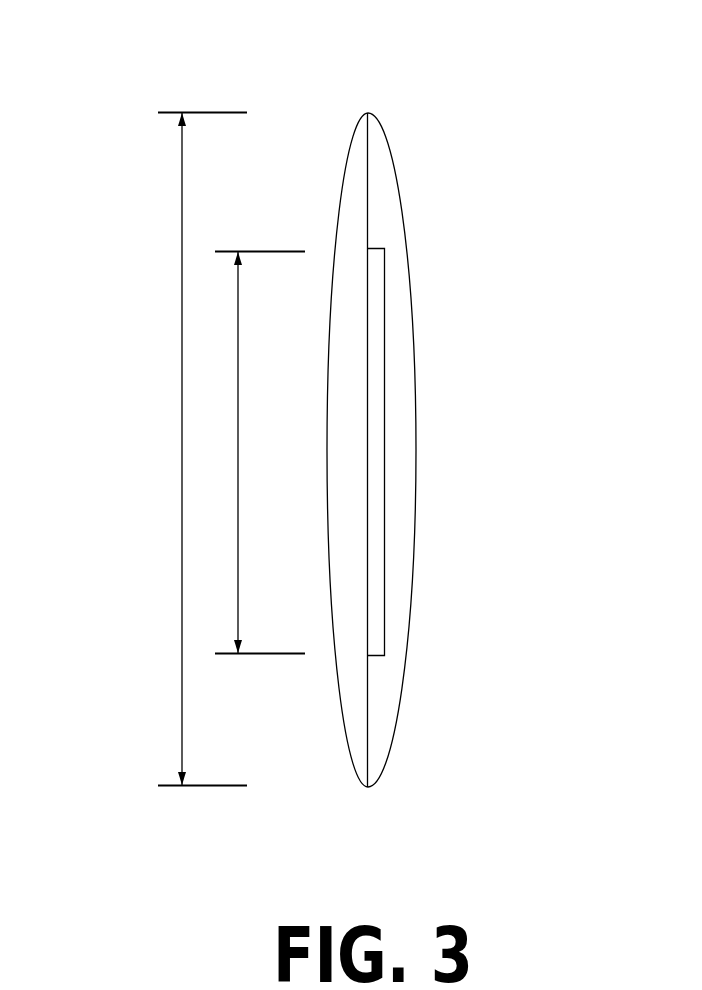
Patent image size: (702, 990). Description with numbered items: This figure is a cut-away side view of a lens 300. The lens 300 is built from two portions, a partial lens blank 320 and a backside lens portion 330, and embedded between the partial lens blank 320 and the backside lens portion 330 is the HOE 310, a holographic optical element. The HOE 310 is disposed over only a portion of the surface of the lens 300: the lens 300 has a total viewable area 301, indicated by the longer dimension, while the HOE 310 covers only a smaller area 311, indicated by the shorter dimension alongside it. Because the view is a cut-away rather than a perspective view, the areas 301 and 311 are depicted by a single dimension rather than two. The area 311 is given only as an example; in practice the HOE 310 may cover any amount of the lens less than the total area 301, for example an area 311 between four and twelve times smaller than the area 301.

The lens 300 is at (172, 54).
The total viewable area 301 is at (181, 313).
The HOE 310 is at (385, 447).
The area covered by the HOE 311 is at (240, 428).
The partial lens blank 320 is at (327, 422).
The backside lens portion 330 is at (418, 398).